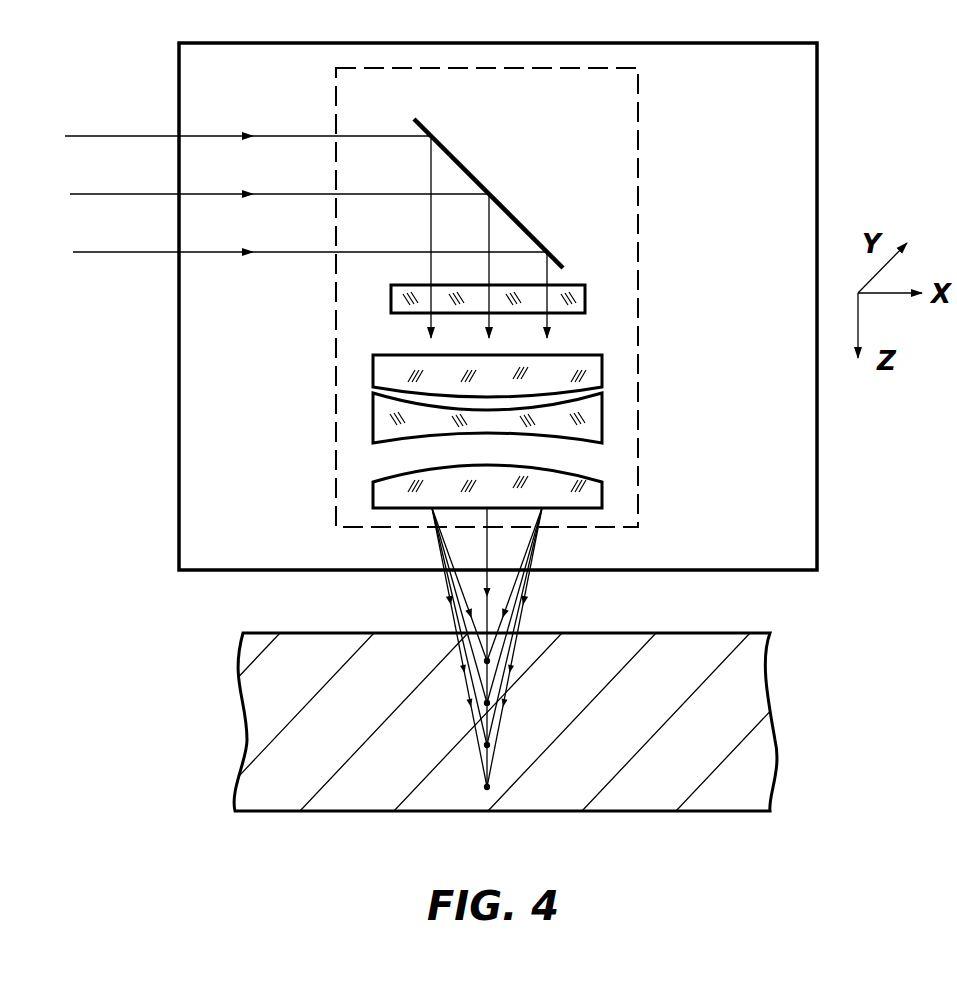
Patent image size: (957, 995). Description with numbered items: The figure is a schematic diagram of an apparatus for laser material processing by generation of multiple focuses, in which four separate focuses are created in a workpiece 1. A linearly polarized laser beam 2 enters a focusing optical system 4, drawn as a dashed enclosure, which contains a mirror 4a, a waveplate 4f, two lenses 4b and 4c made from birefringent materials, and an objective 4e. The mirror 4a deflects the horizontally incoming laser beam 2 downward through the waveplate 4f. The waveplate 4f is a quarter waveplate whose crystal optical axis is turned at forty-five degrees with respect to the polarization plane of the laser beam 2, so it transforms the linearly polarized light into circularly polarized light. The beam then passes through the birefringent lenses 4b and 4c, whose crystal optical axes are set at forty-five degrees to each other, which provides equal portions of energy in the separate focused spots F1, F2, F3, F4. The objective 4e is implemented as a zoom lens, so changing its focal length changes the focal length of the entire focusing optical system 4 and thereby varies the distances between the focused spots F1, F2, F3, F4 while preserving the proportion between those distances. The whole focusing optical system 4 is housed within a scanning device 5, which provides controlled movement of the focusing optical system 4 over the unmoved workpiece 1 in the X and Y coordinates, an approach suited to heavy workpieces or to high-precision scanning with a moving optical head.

The workpiece 1 is at (237, 697).
The laser beam 2 is at (147, 265).
The focusing optical system 4 is at (336, 313).
The mirror 4a is at (522, 217).
The birefringent lens 4b is at (602, 372).
The birefringent lens 4c is at (602, 410).
The objective 4e is at (602, 497).
The waveplate 4f is at (585, 300).
The scanning device 5 is at (179, 453).
The focused spot F1 is at (489, 661).
The focused spot F2 is at (486, 702).
The focused spot F3 is at (489, 744).
The focused spot F4 is at (486, 786).